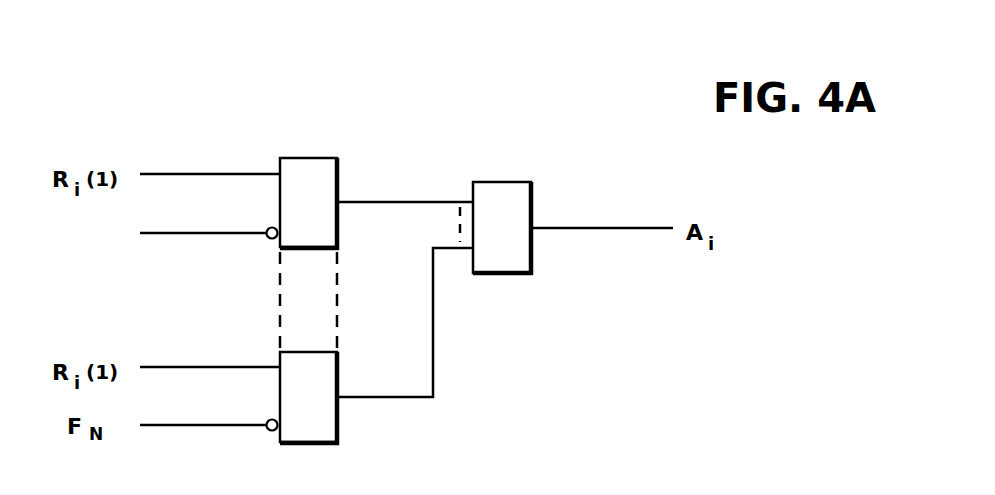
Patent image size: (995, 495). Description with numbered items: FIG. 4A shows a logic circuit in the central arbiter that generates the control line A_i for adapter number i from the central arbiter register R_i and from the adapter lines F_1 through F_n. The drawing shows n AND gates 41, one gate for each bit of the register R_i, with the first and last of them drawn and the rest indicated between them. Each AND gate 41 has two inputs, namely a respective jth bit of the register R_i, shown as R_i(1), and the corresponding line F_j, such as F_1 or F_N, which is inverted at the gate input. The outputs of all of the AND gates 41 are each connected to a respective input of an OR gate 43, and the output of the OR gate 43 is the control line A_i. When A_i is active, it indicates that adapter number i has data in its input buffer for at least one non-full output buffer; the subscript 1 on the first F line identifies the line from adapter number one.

The first flag signal input F1 1 is at (166, 235).
The AND gate 41 is at (338, 165).
The OR gate 43 is at (505, 182).